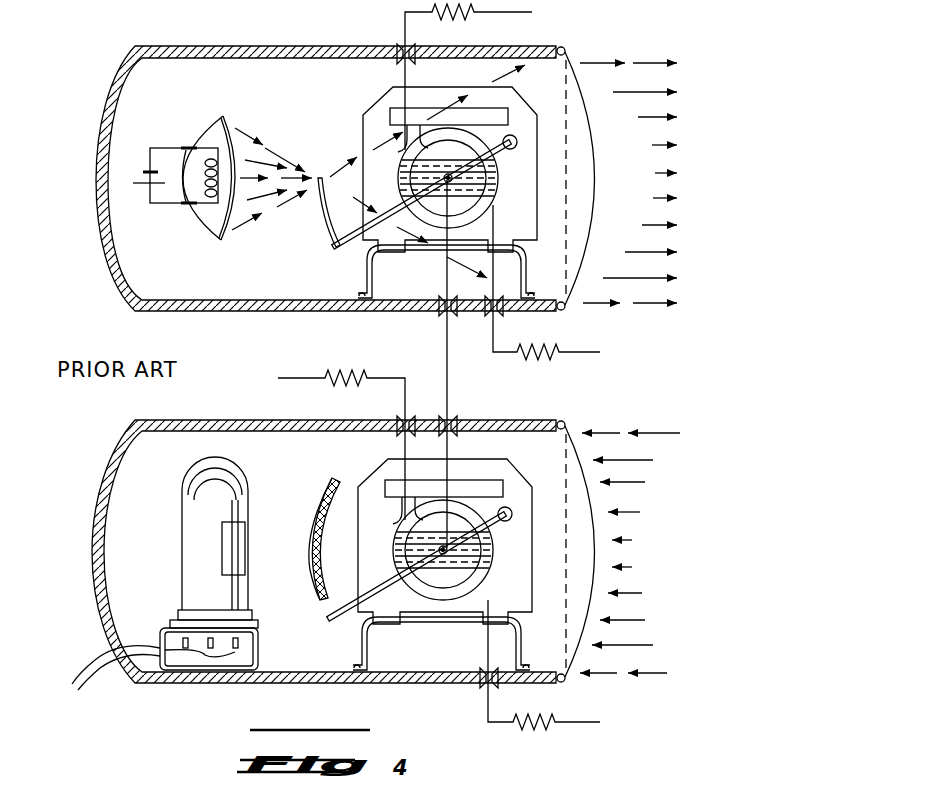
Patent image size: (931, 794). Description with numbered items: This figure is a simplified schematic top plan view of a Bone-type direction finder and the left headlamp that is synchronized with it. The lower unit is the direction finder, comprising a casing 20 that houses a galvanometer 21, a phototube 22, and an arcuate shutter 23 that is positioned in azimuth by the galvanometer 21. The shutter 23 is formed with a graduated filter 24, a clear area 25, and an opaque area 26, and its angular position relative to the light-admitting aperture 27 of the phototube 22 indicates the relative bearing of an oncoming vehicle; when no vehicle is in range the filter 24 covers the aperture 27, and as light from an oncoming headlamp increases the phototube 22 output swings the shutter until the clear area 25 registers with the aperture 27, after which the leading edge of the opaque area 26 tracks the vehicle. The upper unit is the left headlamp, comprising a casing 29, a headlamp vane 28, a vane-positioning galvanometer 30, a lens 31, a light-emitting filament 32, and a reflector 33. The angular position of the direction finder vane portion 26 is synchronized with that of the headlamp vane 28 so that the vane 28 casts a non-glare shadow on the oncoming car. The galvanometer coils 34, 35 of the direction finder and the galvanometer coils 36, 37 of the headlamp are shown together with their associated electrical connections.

The casing 20 is at (220, 420).
The galvanometer 21 is at (365, 458).
The phototube 22 is at (180, 520).
The arcuate shutter 23 is at (320, 487).
The graduated filter 24 is at (318, 507).
The clear area 25 is at (308, 552).
The opaque area 26 is at (312, 592).
The light-admitting aperture 27 is at (242, 562).
The headlamp vane 28 is at (322, 232).
The casing 29 is at (248, 47).
The vane-positioning galvanometer 30 is at (365, 96).
The lens 31 is at (592, 155).
The light-emitting filament 32 is at (207, 228).
The reflector 33 is at (215, 130).
The galvanometer coil 34 is at (450, 522).
The galvanometer coil 35 is at (456, 598).
The galvanometer coil 36 is at (440, 150).
The galvanometer coil 37 is at (446, 260).